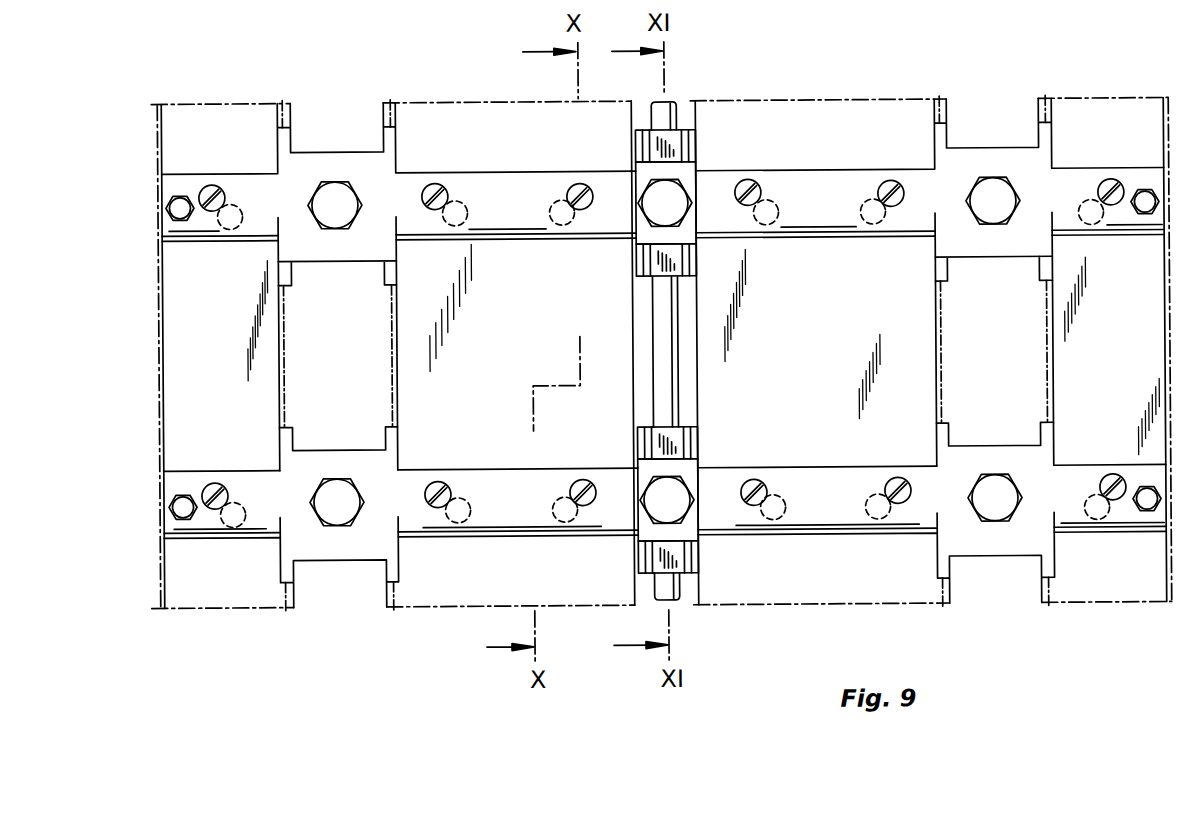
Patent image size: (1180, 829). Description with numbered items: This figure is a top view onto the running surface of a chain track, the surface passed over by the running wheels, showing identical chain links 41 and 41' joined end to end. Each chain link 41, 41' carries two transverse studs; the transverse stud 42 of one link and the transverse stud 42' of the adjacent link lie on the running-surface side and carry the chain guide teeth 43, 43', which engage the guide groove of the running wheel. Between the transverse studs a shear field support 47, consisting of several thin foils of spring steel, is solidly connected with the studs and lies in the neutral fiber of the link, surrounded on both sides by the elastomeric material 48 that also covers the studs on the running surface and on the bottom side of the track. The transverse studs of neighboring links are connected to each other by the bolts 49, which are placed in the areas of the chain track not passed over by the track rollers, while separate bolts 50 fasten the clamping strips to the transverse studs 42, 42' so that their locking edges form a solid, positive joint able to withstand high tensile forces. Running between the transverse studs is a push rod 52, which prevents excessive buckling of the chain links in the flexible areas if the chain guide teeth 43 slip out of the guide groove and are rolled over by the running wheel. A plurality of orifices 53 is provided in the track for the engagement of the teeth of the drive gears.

The chain link 41 is at (633, 352).
The chain link 41' is at (640, 606).
The transverse stud 42 is at (662, 144).
The transverse stud 42' is at (665, 558).
The chain guide tooth 43 is at (637, 203).
The chain guide tooth 43' is at (635, 504).
The shear field support 47 is at (198, 334).
The elastomeric material 48 is at (285, 350).
The bolt 49 is at (320, 202).
The bolt 50 is at (211, 182).
The push rod 52 is at (660, 363).
The orifice 53 is at (320, 334).